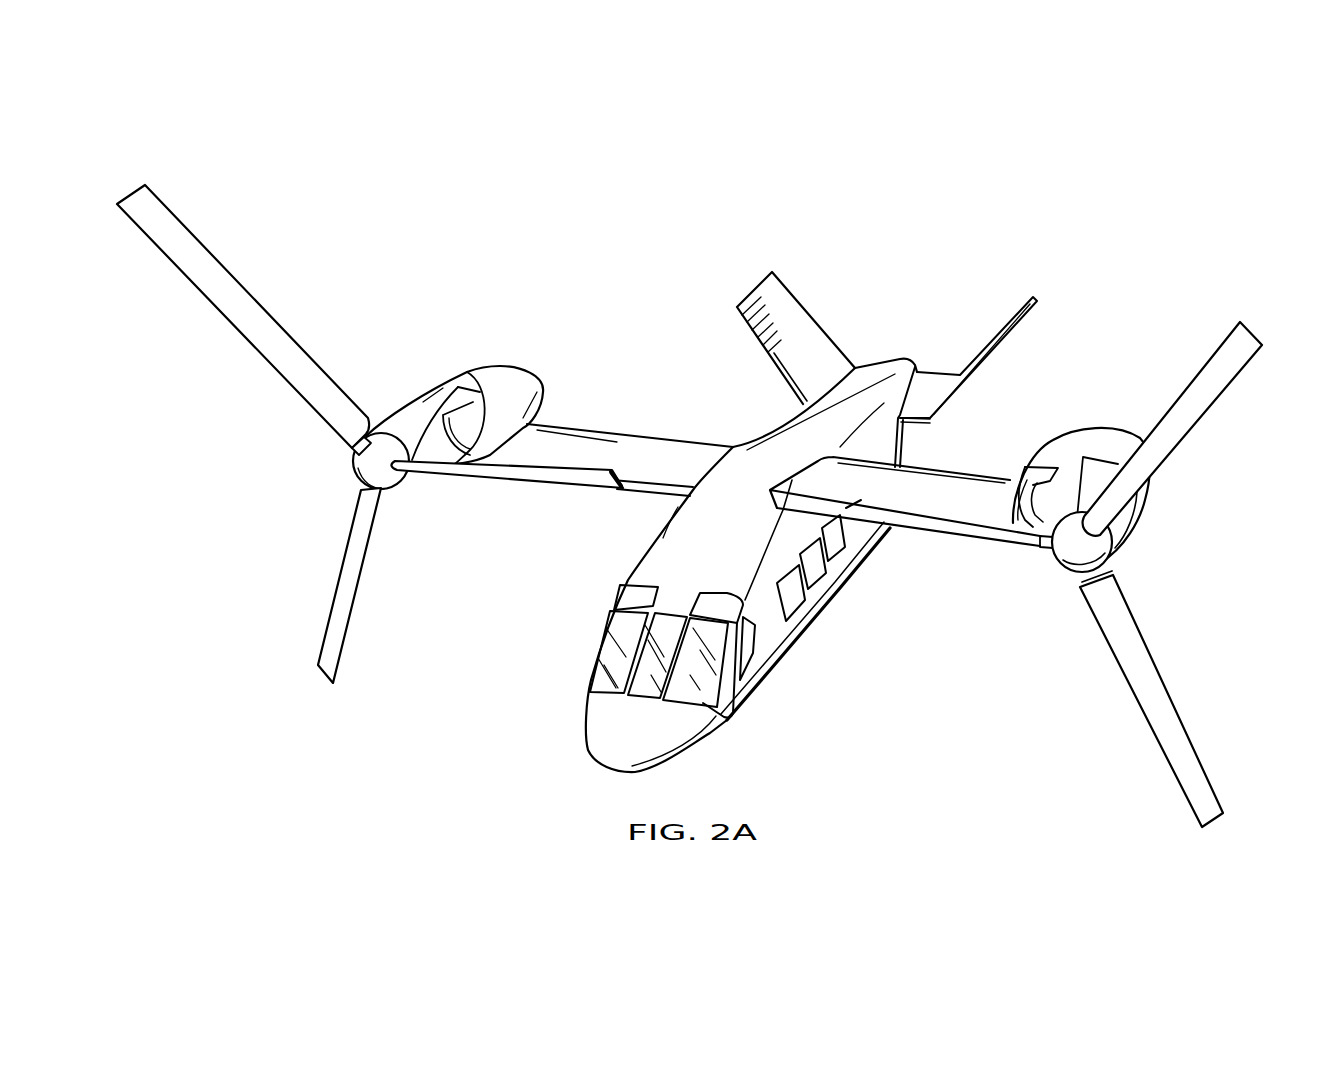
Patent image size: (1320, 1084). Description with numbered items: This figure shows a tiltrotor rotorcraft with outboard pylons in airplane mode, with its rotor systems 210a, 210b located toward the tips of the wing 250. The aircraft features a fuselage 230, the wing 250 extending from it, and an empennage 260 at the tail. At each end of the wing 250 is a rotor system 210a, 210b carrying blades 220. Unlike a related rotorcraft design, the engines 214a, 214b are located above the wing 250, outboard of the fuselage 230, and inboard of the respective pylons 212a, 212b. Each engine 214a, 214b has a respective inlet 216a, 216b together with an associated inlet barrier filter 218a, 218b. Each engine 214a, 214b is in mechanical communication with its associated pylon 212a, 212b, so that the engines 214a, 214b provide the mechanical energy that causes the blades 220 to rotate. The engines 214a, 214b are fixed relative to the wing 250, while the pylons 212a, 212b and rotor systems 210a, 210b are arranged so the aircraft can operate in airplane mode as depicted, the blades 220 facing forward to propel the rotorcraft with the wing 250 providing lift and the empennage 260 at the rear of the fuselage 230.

The rotor system 210a is at (462, 393).
The rotor system 210b is at (1102, 473).
The pylon 212a is at (410, 412).
The pylon 212b is at (1140, 523).
The engine 214a is at (527, 380).
The engine 214b is at (1078, 435).
The inlet 216a is at (457, 448).
The inlet 216b is at (1007, 533).
The inlet barrier filter 218a is at (475, 375).
The inlet barrier filter 218b is at (1043, 475).
The blades 220 is at (195, 285).
The fuselage 230 is at (707, 737).
The wing 250 is at (630, 440).
The empennage 260 is at (803, 313).